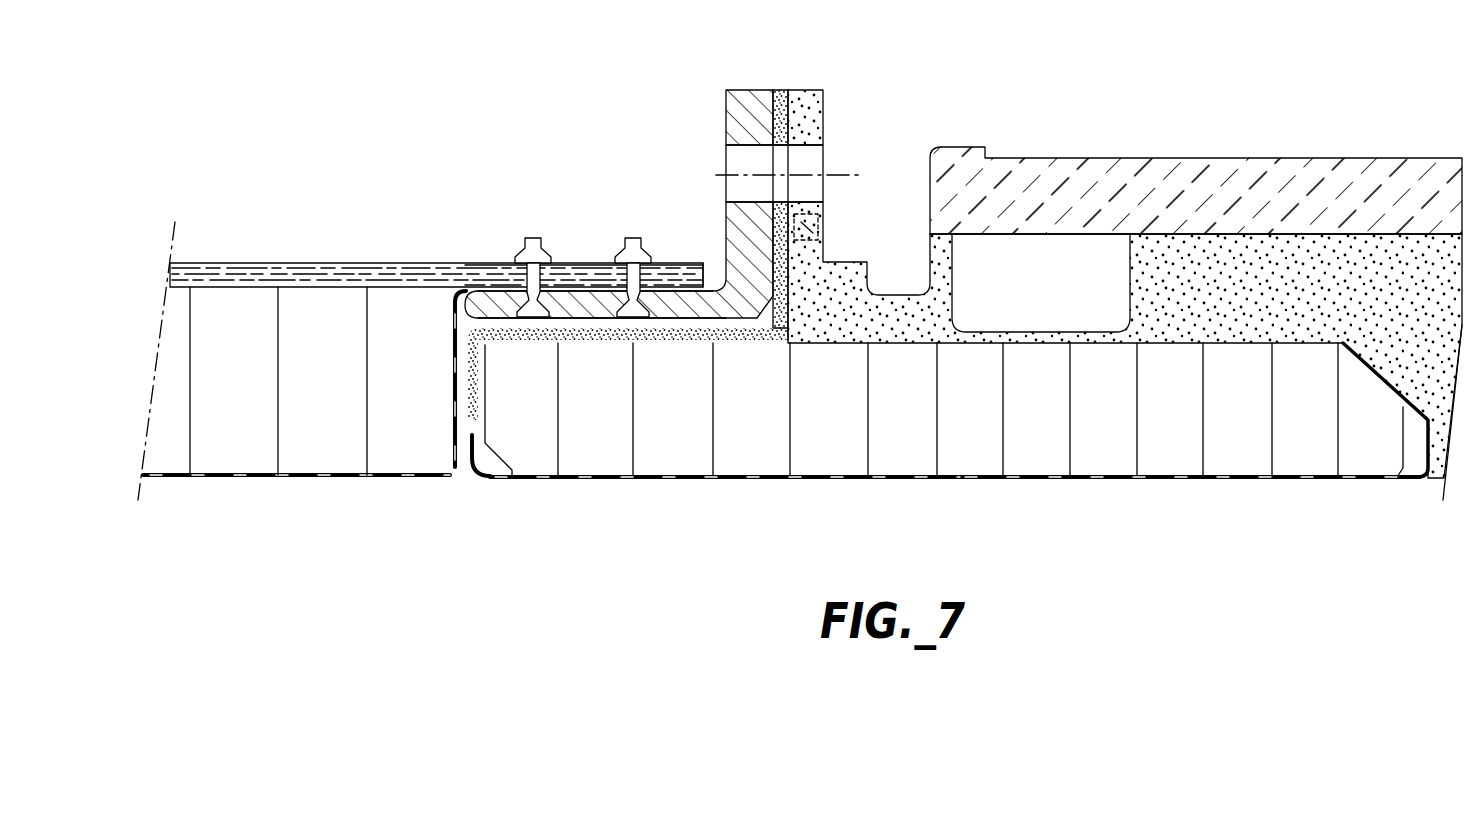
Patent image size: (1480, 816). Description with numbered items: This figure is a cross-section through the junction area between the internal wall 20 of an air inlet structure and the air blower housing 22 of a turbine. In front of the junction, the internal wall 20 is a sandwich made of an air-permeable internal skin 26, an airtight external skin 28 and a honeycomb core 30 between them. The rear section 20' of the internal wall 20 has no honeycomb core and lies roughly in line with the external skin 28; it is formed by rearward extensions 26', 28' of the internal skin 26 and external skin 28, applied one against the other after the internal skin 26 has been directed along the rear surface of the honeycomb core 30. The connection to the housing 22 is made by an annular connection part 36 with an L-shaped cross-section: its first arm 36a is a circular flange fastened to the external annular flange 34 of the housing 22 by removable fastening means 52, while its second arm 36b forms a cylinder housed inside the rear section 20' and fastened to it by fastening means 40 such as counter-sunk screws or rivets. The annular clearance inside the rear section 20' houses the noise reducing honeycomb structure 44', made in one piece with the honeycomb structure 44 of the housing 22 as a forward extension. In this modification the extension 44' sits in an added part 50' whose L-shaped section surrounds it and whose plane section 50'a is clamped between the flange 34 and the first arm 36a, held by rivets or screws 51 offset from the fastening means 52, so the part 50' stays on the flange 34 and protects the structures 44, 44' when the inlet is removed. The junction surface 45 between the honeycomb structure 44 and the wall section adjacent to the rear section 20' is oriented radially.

The internal wall 20 is at (427, 231).
The external skin 28 is at (437, 230).
The internal skin 26 is at (296, 519).
The honeycomb core 30 is at (308, 413).
The extension of the internal skin 26' is at (571, 231).
The extension of the external skin 28' is at (584, 227).
The rear section of the internal wall 20' is at (681, 231).
The annular connection part 36 is at (720, 92).
The first arm 36a is at (755, 122).
The second arm 36b is at (497, 318).
The fastening means 40 is at (629, 300).
The plane section 50'a is at (757, 175).
The added part 50' is at (628, 374).
The external annular flange 34 is at (810, 112).
The removable fastening means 52 is at (845, 175).
The rivets or screws 51 is at (833, 207).
The air blower housing 22 is at (1221, 230).
The honeycomb structure 44 is at (950, 453).
The noise reducing honeycomb structure 44' is at (725, 520).
The junction surface 45 is at (444, 478).